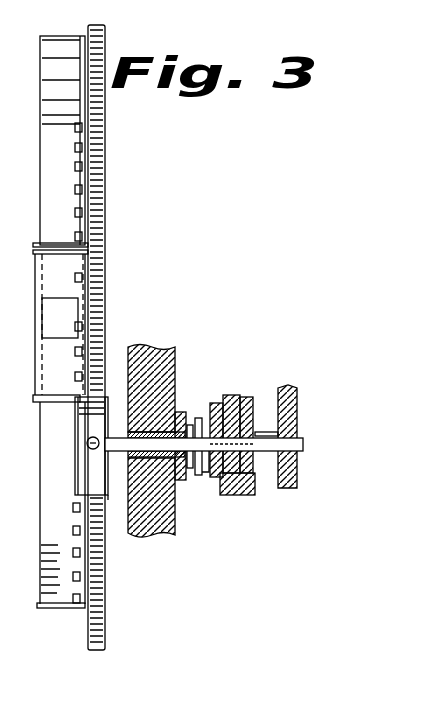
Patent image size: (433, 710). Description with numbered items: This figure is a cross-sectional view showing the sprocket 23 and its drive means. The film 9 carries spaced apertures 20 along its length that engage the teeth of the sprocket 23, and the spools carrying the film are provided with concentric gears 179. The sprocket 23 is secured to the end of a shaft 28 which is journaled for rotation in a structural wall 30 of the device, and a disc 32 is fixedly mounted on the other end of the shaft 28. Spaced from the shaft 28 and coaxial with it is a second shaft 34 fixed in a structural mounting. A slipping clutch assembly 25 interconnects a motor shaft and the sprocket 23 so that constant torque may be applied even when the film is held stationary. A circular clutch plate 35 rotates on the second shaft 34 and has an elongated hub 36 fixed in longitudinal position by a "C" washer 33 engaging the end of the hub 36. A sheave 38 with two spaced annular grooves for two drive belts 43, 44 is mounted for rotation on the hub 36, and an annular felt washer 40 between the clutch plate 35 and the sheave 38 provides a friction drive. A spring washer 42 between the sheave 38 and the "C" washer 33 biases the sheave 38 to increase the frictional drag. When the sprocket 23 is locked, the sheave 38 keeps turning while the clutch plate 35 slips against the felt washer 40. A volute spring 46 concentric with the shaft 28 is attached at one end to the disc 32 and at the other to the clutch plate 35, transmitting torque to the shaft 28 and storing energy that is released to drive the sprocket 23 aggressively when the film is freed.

The film 9 is at (45, 183).
The concentric gears 179 is at (108, 153).
The spaced apertures 20 is at (82, 211).
The sprocket 23 is at (108, 372).
The structural wall 30 is at (150, 348).
The disc 32 is at (181, 410).
The slipping clutch assembly 25 is at (249, 439).
The drive belt 43 is at (222, 402).
The drive belt 44 is at (246, 400).
The "C" washer 33 is at (263, 435).
The volute spring 46 is at (188, 468).
The clutch plate 35 is at (210, 482).
The annular felt washer 40 is at (222, 480).
The sheave 38 is at (246, 492).
The spring washer 42 is at (258, 487).
The elongated hub 36 is at (272, 480).
The second shaft 34 is at (303, 452).
The shaft 28 is at (126, 462).